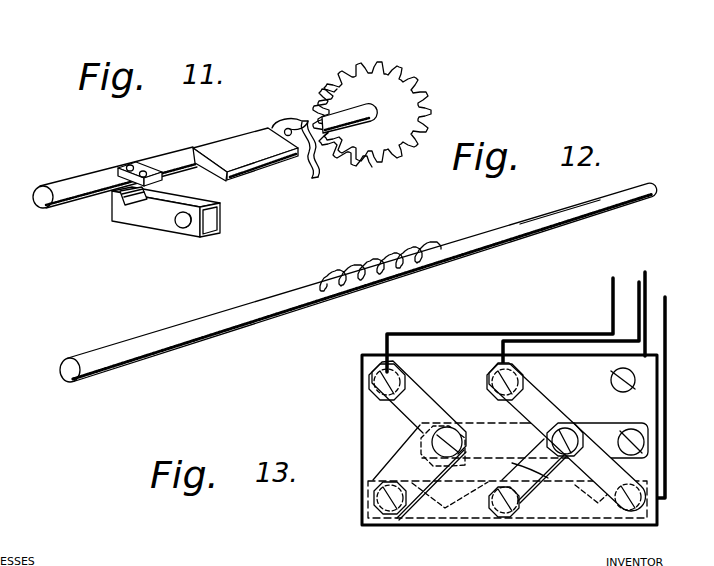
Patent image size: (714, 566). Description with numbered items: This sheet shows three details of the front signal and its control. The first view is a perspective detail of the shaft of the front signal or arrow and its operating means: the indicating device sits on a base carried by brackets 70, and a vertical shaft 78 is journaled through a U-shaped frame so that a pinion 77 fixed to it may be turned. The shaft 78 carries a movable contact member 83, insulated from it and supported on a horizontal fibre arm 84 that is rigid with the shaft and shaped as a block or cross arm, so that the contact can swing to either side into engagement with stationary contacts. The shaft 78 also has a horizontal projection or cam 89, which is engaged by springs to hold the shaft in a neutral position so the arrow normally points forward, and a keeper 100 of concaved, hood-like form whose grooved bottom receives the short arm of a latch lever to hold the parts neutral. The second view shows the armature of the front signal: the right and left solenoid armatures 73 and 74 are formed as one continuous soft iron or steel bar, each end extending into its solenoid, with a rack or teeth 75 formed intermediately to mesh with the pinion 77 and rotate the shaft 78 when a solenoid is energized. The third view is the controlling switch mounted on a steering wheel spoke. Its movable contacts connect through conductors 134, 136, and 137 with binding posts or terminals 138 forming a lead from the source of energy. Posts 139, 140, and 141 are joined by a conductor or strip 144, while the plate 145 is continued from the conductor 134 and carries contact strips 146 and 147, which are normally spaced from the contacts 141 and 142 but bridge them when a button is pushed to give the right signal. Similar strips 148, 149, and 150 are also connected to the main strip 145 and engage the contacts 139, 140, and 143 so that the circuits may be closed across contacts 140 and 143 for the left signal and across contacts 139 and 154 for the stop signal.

In FIG. 11, the brackets 70 is at (326, 121).
In FIG. 12, the right solenoid armature 73 is at (231, 318).
In FIG. 12, the left solenoid armature 74 is at (554, 220).
In FIG. 12, the rack or teeth 75 is at (358, 271).
In FIG. 11, the pinion 77 is at (425, 96).
In FIG. 11, the vertical shaft 78 is at (80, 203).
In FIG. 11, the movable contact member 83 is at (221, 219).
In FIG. 11, the horizontal fibre arm 84 is at (188, 224).
In FIG. 11, the horizontal projection or cam 89 is at (223, 153).
In FIG. 11, the keeper 100 is at (316, 170).
In FIG. 13, the conductor 134 is at (648, 292).
In FIG. 13, the conductor 136 is at (611, 301).
In FIG. 13, the conductor 137 is at (637, 289).
In FIG. 13, the binding posts or terminals 138 is at (666, 328).
In FIG. 13, the post 139 is at (618, 515).
In FIG. 13, the post 140 is at (512, 514).
In FIG. 13, the post 141 is at (386, 519).
In FIG. 13, the post 142 is at (383, 367).
In FIG. 13, the post 143 is at (507, 366).
In FIG. 13, the conductor or strip 144 is at (463, 512).
In FIG. 13, the plate 145 is at (477, 432).
In FIG. 13, the contact strip 146 is at (393, 404).
In FIG. 13, the contact strip 147 is at (412, 468).
In FIG. 13, the strip 148 is at (593, 474).
In FIG. 13, the strip 149 is at (534, 444).
In FIG. 13, the strip 150 is at (542, 405).
In FIG. 13, the contact 154 is at (611, 378).